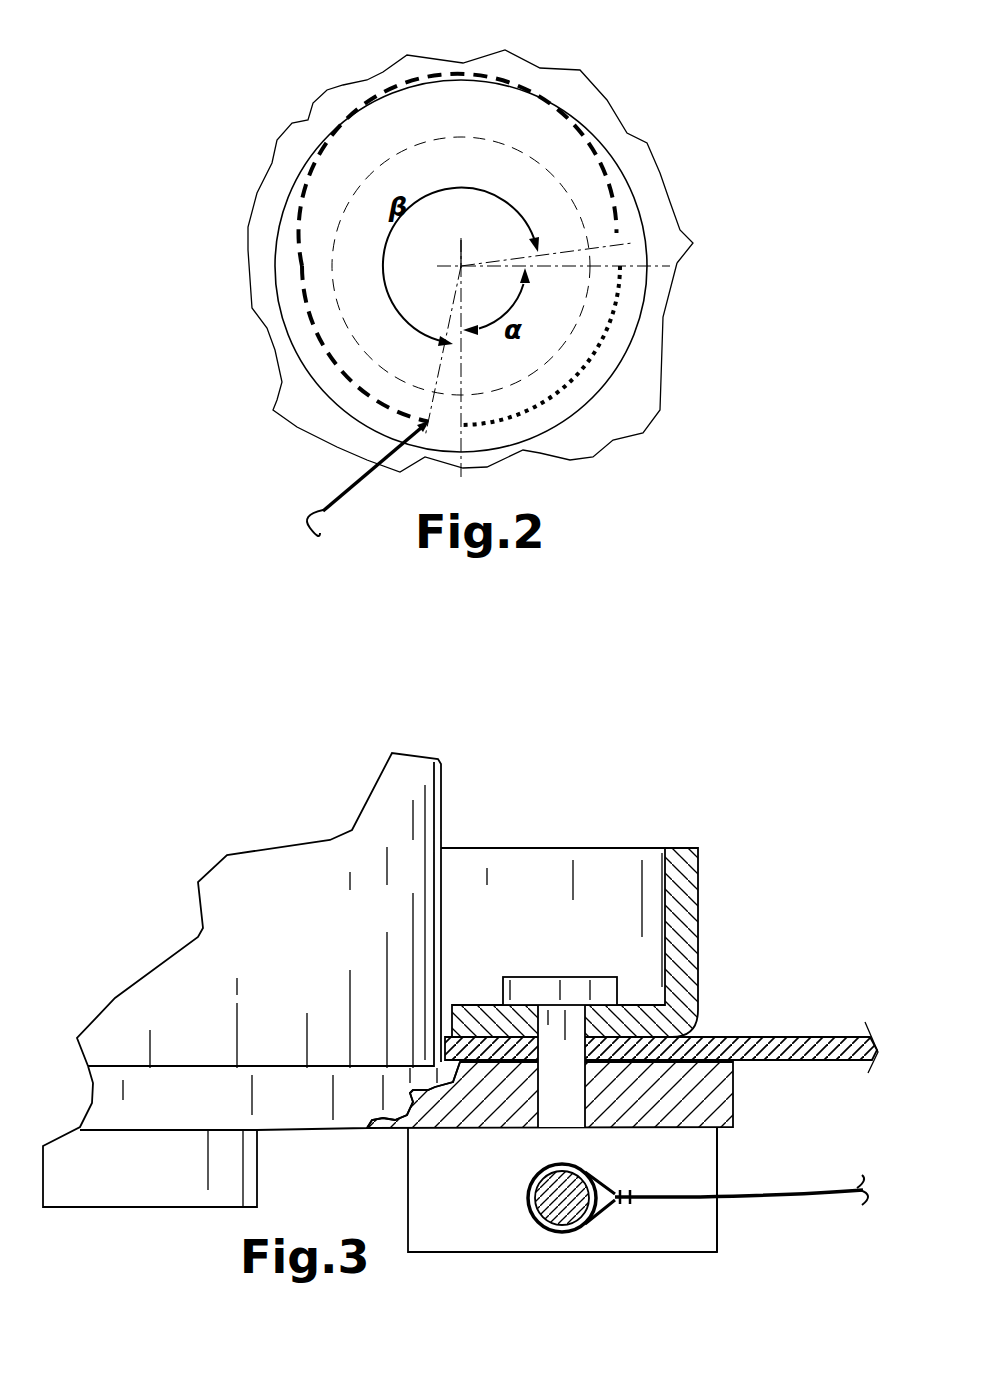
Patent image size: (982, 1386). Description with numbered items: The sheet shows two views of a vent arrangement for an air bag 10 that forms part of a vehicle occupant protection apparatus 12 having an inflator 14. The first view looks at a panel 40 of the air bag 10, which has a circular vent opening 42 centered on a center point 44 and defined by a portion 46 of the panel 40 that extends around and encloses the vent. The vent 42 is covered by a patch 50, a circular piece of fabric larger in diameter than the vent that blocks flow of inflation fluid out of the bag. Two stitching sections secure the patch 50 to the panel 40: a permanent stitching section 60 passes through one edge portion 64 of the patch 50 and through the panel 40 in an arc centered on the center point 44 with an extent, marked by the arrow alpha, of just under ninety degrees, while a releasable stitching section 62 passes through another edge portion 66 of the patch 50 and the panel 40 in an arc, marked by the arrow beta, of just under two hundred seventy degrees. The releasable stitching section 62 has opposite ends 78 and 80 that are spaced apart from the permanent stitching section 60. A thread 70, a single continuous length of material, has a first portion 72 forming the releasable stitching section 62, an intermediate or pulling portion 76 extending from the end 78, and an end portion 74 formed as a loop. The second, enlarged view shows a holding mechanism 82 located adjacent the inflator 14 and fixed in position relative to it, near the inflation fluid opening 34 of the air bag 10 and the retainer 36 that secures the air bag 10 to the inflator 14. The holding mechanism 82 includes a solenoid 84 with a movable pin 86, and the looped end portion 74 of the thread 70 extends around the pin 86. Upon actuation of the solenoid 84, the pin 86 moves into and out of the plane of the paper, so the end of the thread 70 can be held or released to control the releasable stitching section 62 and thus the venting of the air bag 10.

In FIG. 2, the air bag 10 is at (255, 407).
In FIG. 3, the air bag 10 is at (772, 1025).
In FIG. 2, the vehicle occupant protection apparatus 12 is at (600, 478).
In FIG. 3, the vehicle occupant protection apparatus 12 is at (190, 1232).
In FIG. 3, the inflator 14 is at (193, 943).
In FIG. 3, the inflation fluid opening 34 is at (458, 1058).
In FIG. 3, the retainer 36 is at (698, 858).
In FIG. 2, the panel 40 is at (268, 163).
In FIG. 3, the panel 40 is at (817, 1035).
In FIG. 2, the vent opening 42 is at (330, 264).
In FIG. 2, the center point 44 is at (457, 265).
In FIG. 2, the portion of the panel 46 is at (272, 320).
In FIG. 2, the patch 50 is at (575, 105).
In FIG. 2, the permanent stitching section 60 is at (610, 322).
In FIG. 2, the releasable stitching section 62 is at (365, 140).
In FIG. 2, the edge portion of the patch 64 is at (597, 370).
In FIG. 2, the edge portion of the patch 66 is at (420, 107).
In FIG. 2, the thread 70 is at (365, 497).
In FIG. 3, the thread 70 is at (770, 1215).
In FIG. 2, the first portion of the thread 72 is at (513, 112).
In FIG. 3, the end portion of the thread 74 is at (590, 1223).
In FIG. 2, the intermediate portion of the thread 76 is at (323, 502).
In FIG. 3, the intermediate portion of the thread 76 is at (822, 1200).
In FIG. 2, the end of the releasable stitching section 78 is at (425, 425).
In FIG. 2, the end of the releasable stitching section 80 is at (617, 230).
In FIG. 3, the holding mechanism 82 is at (735, 1166).
In FIG. 3, the solenoid 84 is at (463, 1253).
In FIG. 3, the pin 86 is at (563, 1202).